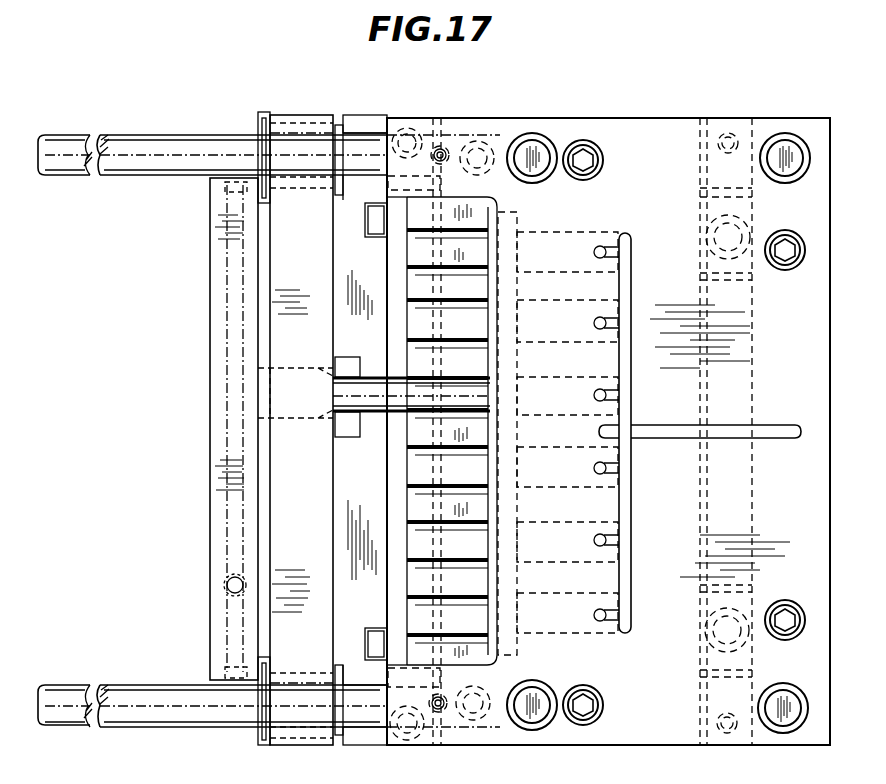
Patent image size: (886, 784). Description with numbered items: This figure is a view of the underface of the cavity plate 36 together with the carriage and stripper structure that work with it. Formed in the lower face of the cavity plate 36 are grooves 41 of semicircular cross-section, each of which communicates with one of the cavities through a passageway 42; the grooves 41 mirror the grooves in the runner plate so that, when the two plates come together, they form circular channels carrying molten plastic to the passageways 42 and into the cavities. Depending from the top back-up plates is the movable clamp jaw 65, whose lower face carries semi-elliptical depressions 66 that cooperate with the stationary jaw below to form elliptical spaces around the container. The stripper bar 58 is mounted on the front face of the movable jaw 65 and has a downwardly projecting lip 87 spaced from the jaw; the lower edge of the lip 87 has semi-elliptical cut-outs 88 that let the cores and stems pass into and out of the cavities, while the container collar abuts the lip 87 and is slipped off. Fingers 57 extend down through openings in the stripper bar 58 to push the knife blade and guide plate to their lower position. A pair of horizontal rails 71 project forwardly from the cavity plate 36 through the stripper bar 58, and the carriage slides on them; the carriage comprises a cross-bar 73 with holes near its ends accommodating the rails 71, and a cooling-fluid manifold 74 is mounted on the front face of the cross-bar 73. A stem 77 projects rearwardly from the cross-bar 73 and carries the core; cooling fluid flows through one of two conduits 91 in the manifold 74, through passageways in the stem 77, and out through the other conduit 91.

The cavity plate 36 is at (636, 130).
The grooves 41 is at (630, 367).
The passageway 42 is at (595, 252).
The fingers 57 is at (382, 237).
The stripper bar 58 is at (357, 126).
The movable clamp jaw 65 is at (411, 498).
The semi-elliptical depressions 66 is at (489, 262).
The horizontal rails 71 is at (136, 170).
The cross-bar 73 is at (307, 509).
The cooling-fluid manifold 74 is at (214, 512).
The stem 77 is at (374, 392).
The lip 87 is at (355, 427).
The semi-elliptical cut-outs 88 is at (339, 360).
The conduits 91 is at (230, 550).